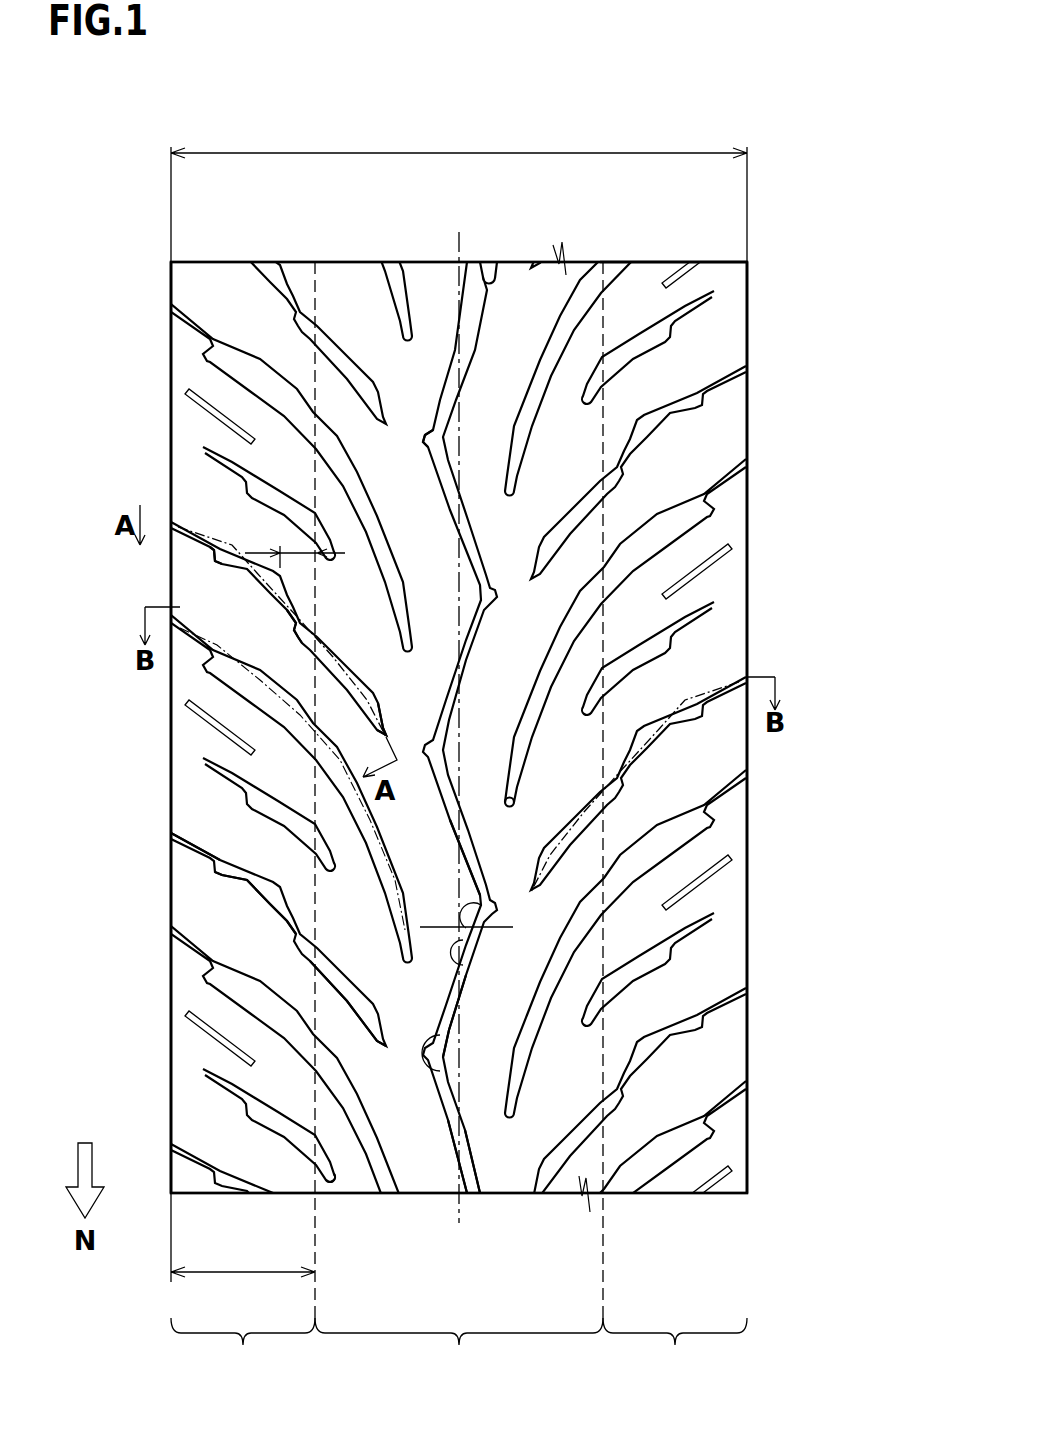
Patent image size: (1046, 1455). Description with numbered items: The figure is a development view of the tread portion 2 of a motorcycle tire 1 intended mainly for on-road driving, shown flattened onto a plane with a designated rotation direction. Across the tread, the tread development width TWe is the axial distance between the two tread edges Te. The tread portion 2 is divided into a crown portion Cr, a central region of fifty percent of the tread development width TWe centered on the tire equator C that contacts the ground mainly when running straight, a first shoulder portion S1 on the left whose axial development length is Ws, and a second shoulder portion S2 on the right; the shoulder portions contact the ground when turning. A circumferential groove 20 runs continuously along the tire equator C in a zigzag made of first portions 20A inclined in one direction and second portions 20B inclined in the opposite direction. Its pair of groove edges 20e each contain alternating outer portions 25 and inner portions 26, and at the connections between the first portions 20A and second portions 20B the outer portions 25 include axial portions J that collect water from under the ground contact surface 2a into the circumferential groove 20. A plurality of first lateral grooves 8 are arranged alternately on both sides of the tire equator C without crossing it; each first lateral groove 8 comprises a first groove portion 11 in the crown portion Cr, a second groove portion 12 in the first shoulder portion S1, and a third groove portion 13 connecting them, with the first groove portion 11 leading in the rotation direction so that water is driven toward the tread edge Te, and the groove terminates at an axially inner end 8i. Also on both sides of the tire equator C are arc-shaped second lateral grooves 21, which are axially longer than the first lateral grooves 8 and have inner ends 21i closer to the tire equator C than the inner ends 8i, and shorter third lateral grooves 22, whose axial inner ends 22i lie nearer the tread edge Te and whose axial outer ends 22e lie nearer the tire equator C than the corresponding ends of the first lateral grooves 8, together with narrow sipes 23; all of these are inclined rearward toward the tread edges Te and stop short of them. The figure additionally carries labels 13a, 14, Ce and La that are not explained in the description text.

The motorcycle tire 1 is at (832, 186).
The tread portion 2 is at (771, 206).
The ground contact surface 2a is at (643, 292).
The first lateral groove 8 is at (158, 562).
The inner end of the first lateral groove 8i is at (386, 736).
The first groove portion 11 is at (333, 990).
The second groove portion 12 is at (247, 880).
The third groove portion 13 is at (287, 923).
The step portion of lateral groove 13a is at (297, 617).
The fourth portion of lateral groove 14 is at (197, 838).
The circumferential groove 20 is at (478, 305).
The first portions 20A is at (450, 1040).
The second portions 20B is at (473, 877).
The groove edges 20e is at (430, 1193).
The second lateral grooves 21 is at (262, 668).
The inner ends of the second lateral grooves 21i is at (518, 798).
The third lateral grooves 22 is at (245, 476).
The axial outer ends of the third lateral grooves 22e is at (203, 1071).
The axial inner ends of the third lateral grooves 22i is at (353, 1193).
The sipes 23 is at (215, 412).
The outer portions 25 is at (513, 927).
The inner portions 26 is at (463, 977).
The tread edges Te is at (171, 303).
The tread development width TWe is at (459, 191).
The crown region edge Ce is at (313, 288).
The tire equator C is at (459, 712).
The axial portions J is at (427, 436).
The groove axis line La is at (270, 548).
The development length of the first shoulder portion Ws is at (243, 1253).
The first shoulder portion S1 is at (243, 1348).
The crown portion Cr is at (459, 1348).
The second shoulder portion S2 is at (675, 1348).